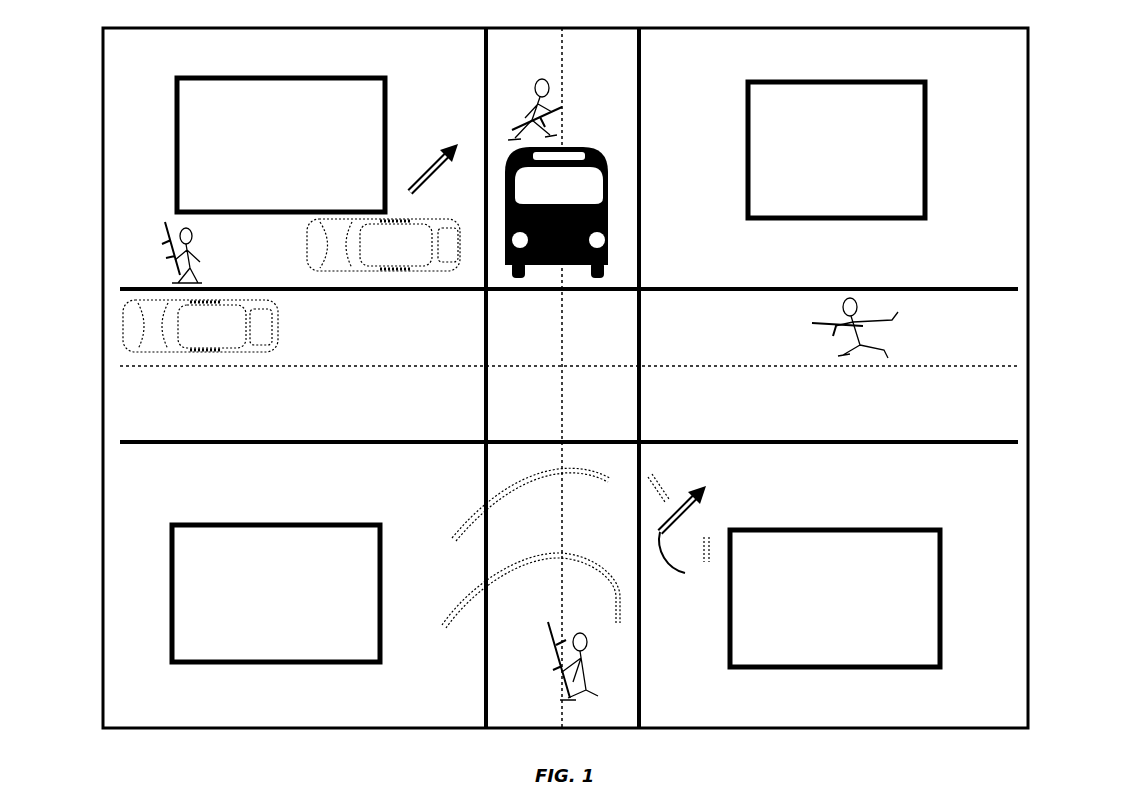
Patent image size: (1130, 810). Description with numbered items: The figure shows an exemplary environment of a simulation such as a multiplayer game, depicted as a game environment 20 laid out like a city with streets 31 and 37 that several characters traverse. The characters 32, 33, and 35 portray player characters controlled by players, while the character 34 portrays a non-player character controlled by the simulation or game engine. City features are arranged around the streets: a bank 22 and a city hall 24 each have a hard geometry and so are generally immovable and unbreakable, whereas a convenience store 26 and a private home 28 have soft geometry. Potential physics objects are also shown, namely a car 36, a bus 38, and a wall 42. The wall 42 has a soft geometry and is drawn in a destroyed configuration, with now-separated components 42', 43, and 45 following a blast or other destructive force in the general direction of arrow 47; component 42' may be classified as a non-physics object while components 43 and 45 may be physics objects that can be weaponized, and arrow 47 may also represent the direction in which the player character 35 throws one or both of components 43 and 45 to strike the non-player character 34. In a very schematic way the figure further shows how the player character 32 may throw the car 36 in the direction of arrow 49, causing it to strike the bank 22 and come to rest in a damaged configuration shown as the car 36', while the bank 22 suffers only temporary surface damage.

The game environment 20 is at (1046, 73).
The bank 22 is at (387, 172).
The city hall 24 is at (927, 150).
The convenience store 26 is at (383, 596).
The private home 28 is at (943, 600).
The street 31 is at (838, 448).
The player character 32 is at (205, 258).
The player character 33 is at (528, 86).
The non-player character 34 is at (849, 328).
The player character 35 is at (540, 630).
The car 36 is at (217, 326).
The car in damaged configuration 36' is at (385, 228).
The street 37 is at (643, 706).
The bus 38 is at (604, 153).
The wall 42 is at (526, 593).
The wall component 42' is at (525, 501).
The wall component 43 is at (672, 493).
The wall component 45 is at (712, 543).
The arrow 47 is at (684, 561).
The arrow 49 is at (441, 152).